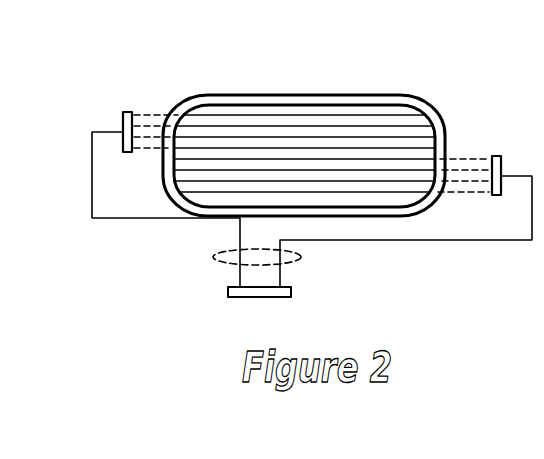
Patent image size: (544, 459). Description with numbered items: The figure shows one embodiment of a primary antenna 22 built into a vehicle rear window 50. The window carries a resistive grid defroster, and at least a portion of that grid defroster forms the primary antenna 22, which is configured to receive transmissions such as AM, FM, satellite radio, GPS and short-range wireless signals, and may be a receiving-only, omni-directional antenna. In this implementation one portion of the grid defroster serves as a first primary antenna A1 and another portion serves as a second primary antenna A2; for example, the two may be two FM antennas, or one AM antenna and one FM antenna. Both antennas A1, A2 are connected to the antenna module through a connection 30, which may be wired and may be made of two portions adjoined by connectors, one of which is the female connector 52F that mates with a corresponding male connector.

The vehicle rear window 50 is at (312, 156).
The primary antenna 22 is at (350, 107).
The connection 30 is at (208, 259).
The female connector 52F is at (288, 286).
The first primary antenna A1 is at (150, 155).
The second primary antenna A2 is at (455, 198).